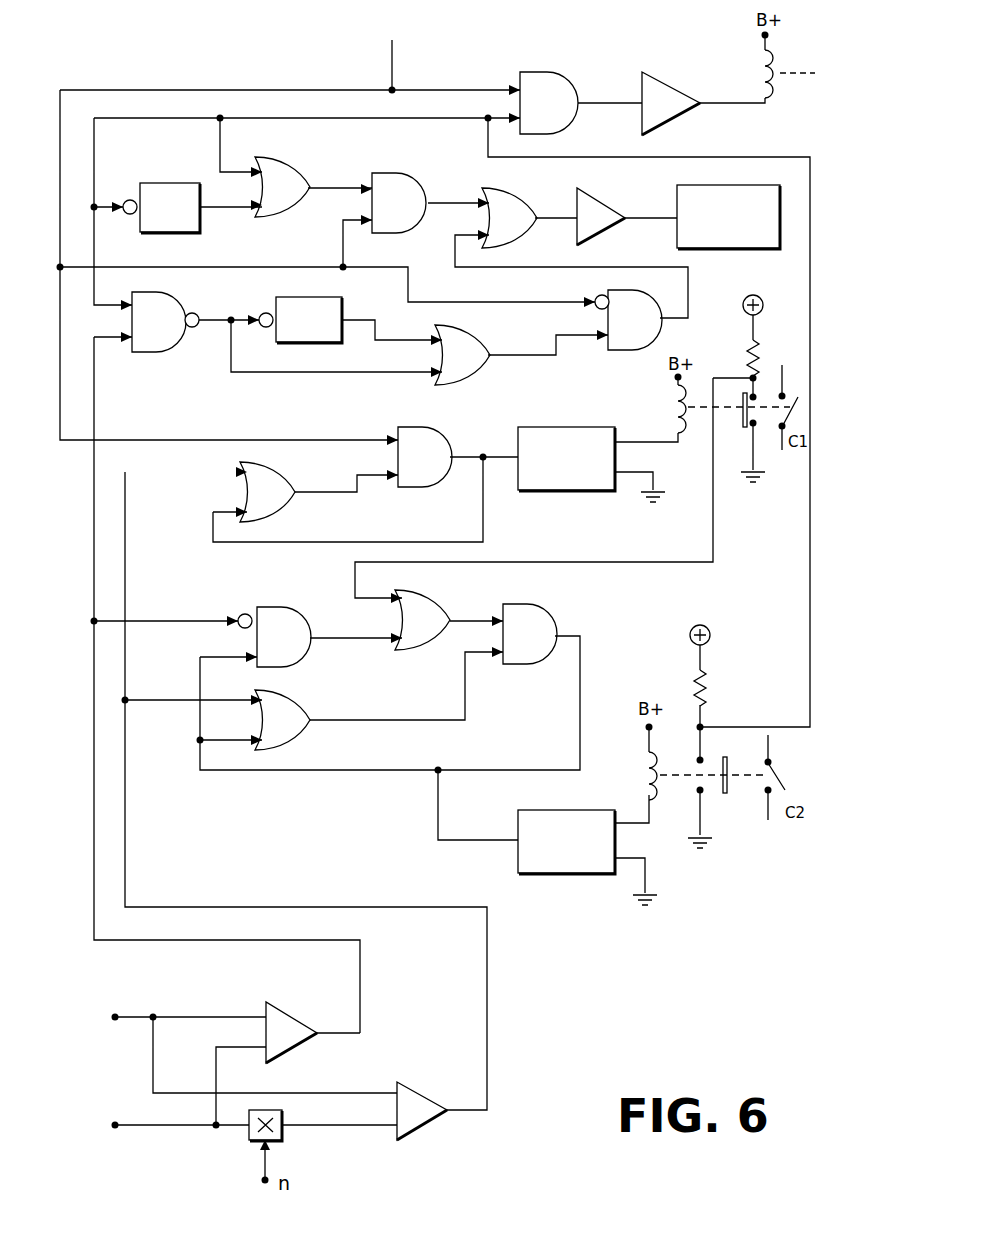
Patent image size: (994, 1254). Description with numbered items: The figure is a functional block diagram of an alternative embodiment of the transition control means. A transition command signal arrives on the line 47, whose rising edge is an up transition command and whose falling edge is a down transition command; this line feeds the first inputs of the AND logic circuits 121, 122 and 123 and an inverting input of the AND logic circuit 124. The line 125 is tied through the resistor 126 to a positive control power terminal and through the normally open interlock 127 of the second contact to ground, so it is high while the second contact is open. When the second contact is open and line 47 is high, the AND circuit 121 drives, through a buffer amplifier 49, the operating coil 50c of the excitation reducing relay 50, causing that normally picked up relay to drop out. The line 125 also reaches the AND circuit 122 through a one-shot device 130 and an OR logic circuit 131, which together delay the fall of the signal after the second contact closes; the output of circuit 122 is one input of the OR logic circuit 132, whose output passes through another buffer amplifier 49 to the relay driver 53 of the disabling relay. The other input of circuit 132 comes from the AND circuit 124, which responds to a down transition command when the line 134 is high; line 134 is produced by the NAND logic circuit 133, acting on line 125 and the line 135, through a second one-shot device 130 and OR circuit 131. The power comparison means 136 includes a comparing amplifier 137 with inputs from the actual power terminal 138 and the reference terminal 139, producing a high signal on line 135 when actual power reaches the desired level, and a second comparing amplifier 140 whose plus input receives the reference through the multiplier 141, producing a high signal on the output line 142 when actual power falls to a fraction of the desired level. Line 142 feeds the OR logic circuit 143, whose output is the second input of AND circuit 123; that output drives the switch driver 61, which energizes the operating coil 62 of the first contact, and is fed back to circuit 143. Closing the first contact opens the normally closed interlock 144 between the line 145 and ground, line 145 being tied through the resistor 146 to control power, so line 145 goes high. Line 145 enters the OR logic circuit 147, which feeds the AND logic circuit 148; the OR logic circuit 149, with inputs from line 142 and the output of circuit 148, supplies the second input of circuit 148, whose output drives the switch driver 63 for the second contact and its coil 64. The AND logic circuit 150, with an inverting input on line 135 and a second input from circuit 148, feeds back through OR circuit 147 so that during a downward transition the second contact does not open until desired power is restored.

The line 47 is at (396, 58).
The AND logic circuit 121 is at (565, 72).
The buffer amplifier 49 is at (674, 66).
The operating coil 50c is at (762, 80).
The excitation reducing relay 50 is at (815, 58).
The line 125 is at (694, 158).
The one-shot device 130 is at (173, 182).
The OR logic circuit 131 is at (286, 158).
The AND logic circuit 122 is at (408, 172).
The OR logic circuit 132 is at (530, 192).
The relay driver 53 is at (740, 249).
The NAND logic circuit 133 is at (182, 286).
The line 134 is at (556, 358).
The AND logic circuit 124 is at (636, 350).
The line 135 is at (96, 400).
The AND logic circuit 123 is at (436, 430).
The OR logic circuit 143 is at (284, 466).
The switch driver 61 is at (575, 491).
The operating coil 62 is at (672, 402).
The resistor 146 is at (744, 352).
The interlock 144 is at (740, 425).
The line 145 is at (635, 562).
The AND logic circuit 150 is at (294, 596).
The OR logic circuit 147 is at (436, 594).
The AND logic circuit 148 is at (540, 604).
The OR logic circuit 149 is at (300, 694).
The output line 142 is at (127, 832).
The resistor 126 is at (708, 688).
The interlock 127 is at (730, 790).
The switch coil 64 is at (632, 778).
The switch driver 63 is at (568, 874).
The terminal 138 is at (115, 1008).
The comparing amplifier 137 is at (300, 1016).
The comparing amplifier 140 is at (432, 1090).
The multiplier 141 is at (284, 1140).
The terminal 139 is at (115, 1135).
The power comparison means 136 is at (210, 1186).